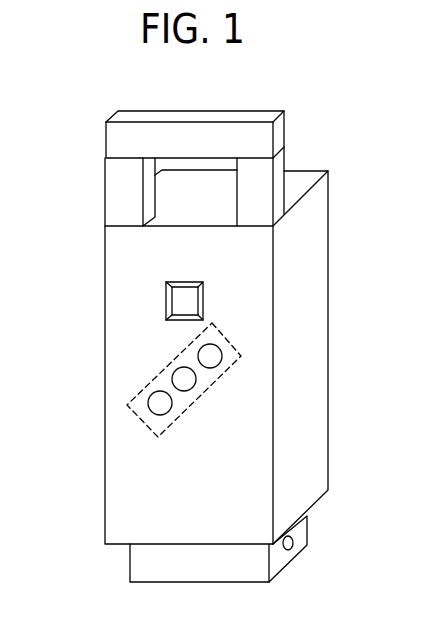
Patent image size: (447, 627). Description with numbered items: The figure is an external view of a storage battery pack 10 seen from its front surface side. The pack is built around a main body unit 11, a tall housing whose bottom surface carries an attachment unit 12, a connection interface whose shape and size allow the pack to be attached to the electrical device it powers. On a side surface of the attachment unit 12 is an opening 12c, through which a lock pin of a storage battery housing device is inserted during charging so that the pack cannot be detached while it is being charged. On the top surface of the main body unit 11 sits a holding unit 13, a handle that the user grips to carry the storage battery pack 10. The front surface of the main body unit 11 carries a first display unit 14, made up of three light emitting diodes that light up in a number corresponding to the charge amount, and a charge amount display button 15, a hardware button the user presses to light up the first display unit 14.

The storage battery pack 10 is at (330, 101).
The main body unit 11 is at (313, 308).
The attachment unit 12 is at (143, 568).
The opening 12c is at (293, 542).
The holding unit 13 is at (120, 136).
The first display unit 14 is at (130, 403).
The charge amount display button 15 is at (177, 303).